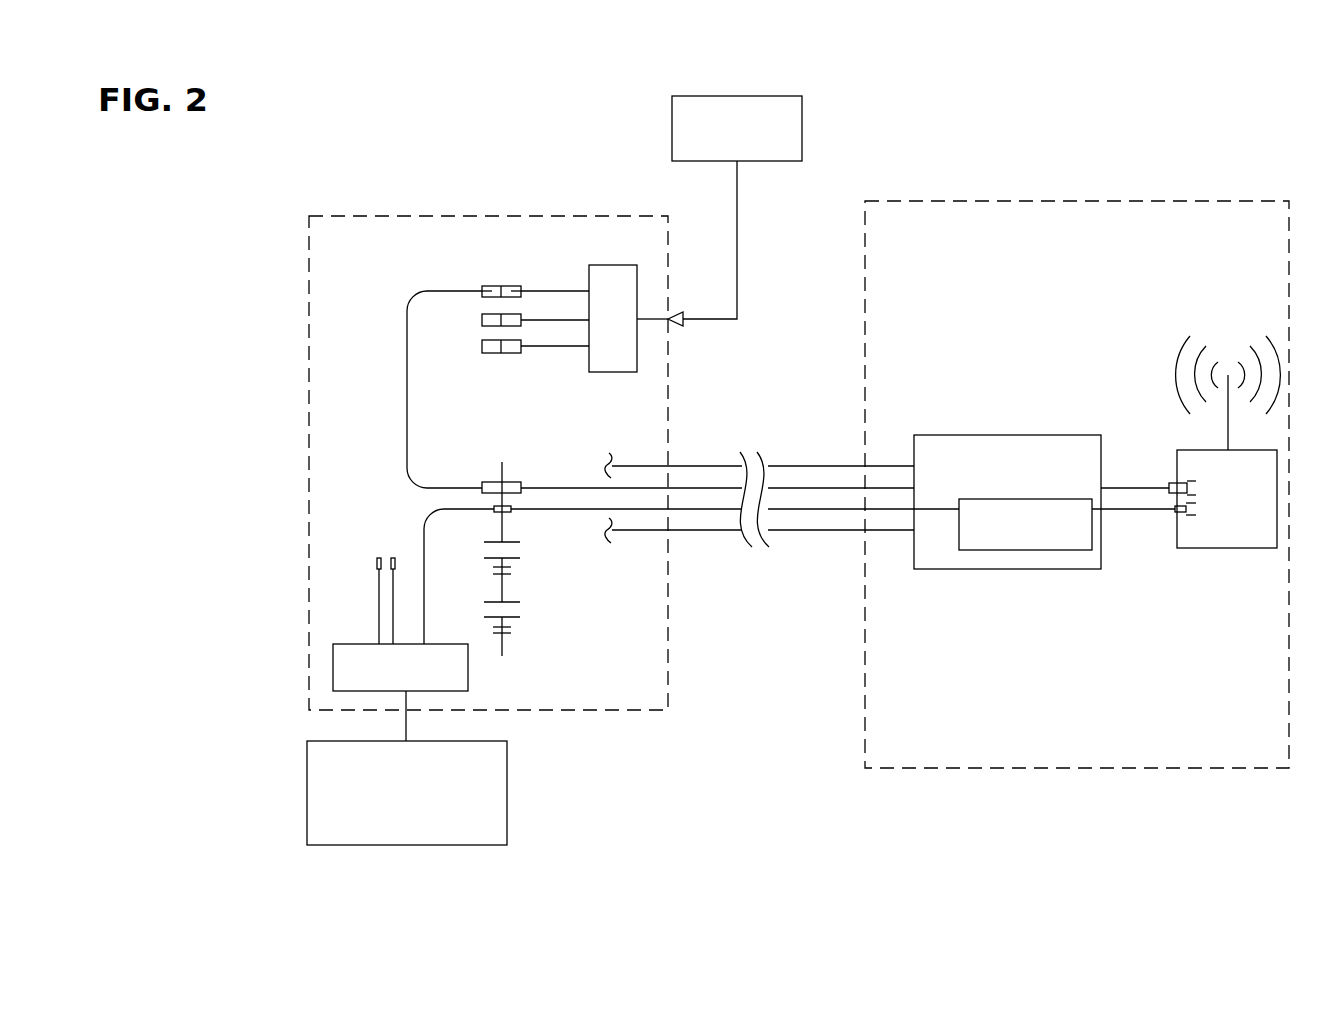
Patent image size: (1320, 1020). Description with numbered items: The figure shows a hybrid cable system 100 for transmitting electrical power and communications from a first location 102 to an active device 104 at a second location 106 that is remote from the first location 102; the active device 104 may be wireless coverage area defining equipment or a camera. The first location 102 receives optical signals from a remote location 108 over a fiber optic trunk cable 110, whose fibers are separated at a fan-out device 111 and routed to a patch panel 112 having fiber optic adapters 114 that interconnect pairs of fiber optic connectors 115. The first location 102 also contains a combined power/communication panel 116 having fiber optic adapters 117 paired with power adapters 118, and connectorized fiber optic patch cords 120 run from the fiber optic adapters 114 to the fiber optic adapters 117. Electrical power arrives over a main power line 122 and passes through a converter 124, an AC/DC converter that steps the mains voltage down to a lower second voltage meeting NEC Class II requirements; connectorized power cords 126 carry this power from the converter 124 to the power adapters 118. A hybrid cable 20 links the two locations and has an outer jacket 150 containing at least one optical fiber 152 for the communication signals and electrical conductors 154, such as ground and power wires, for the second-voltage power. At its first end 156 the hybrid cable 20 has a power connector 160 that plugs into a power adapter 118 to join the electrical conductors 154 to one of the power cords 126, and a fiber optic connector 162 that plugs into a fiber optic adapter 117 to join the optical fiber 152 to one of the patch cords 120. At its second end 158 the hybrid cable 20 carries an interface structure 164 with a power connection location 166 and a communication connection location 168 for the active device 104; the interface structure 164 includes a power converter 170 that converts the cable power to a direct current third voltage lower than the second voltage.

The hybrid cable 20 is at (802, 462).
The cable system 100 is at (780, 622).
The first location 102 is at (457, 215).
The active device 104 is at (1222, 548).
The second location 106 is at (1160, 199).
The remote location 108 is at (782, 96).
The fiber optic trunk cable 110 is at (737, 218).
The fan-out device 111 is at (604, 265).
The patch panel 112 is at (503, 280).
The fiber optic adapters 114 is at (482, 286).
The fiber optic connectors 115 is at (521, 286).
The combined power/communication panel 116 is at (508, 658).
The fiber optic adapters 117 is at (493, 483).
The power adapters 118 is at (505, 512).
The connectorized fiber optic patch cords 120 is at (407, 390).
The main power line 122 is at (405, 724).
The converter 124 is at (333, 666).
The connectorized power cords 126 is at (422, 543).
The outer jacket 150 is at (698, 466).
The optical fiber 152 is at (845, 488).
The electrical conductors 154 is at (810, 509).
The first end 156 is at (616, 533).
The second end 158 is at (890, 530).
The power connector 160 is at (511, 509).
The fiber optic connector 162 is at (521, 488).
The interface structure 164 is at (974, 430).
The power connection location 166 is at (1175, 512).
The communication connection location 168 is at (1169, 483).
The power converter 170 is at (1027, 550).